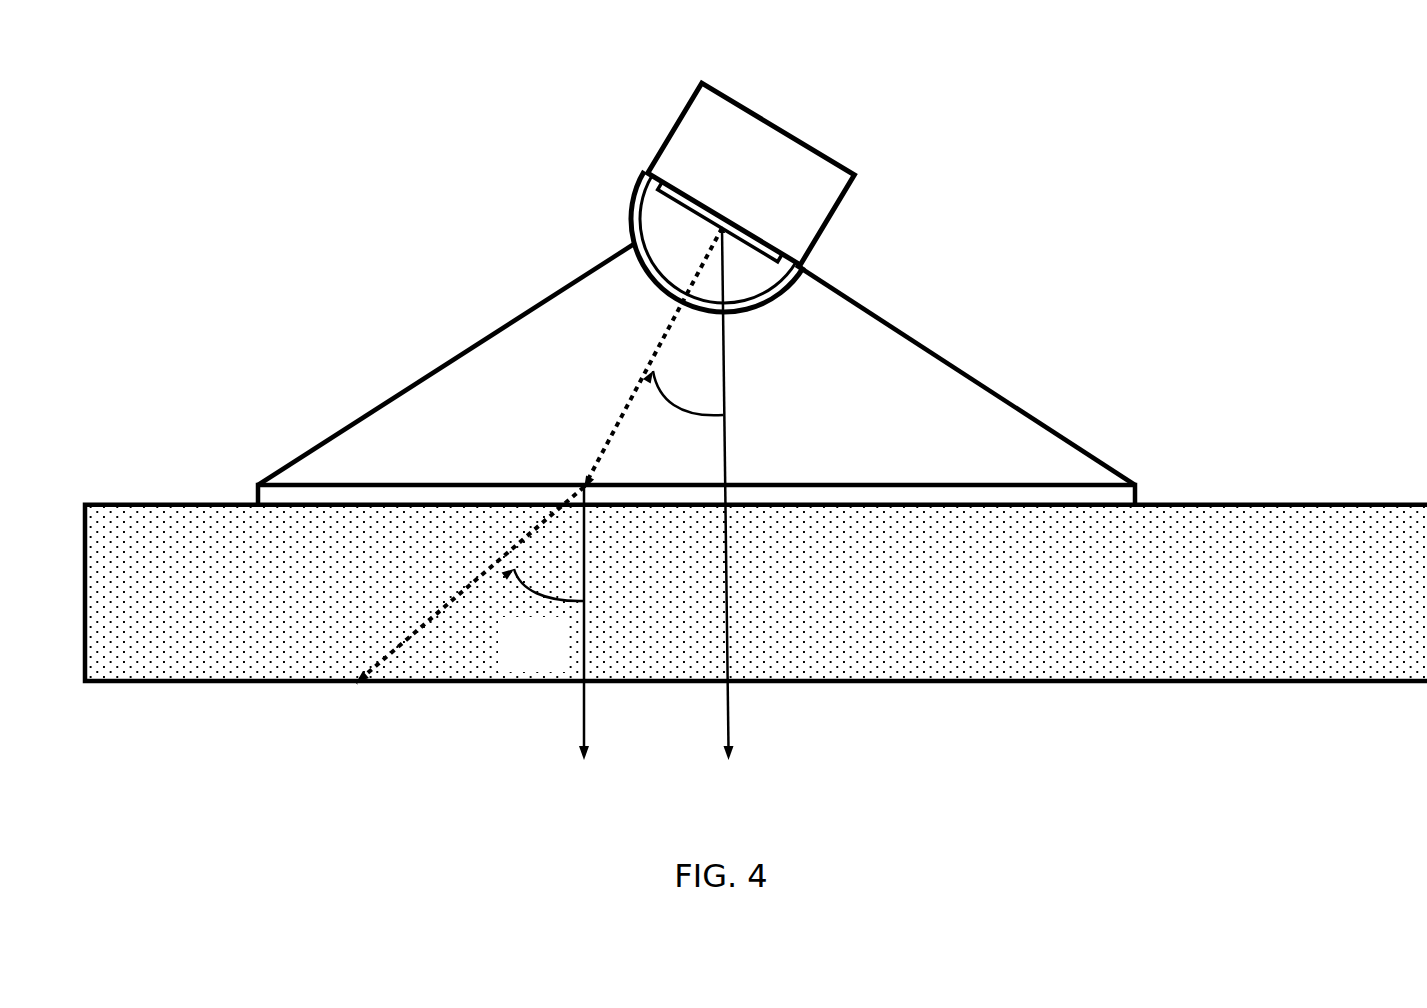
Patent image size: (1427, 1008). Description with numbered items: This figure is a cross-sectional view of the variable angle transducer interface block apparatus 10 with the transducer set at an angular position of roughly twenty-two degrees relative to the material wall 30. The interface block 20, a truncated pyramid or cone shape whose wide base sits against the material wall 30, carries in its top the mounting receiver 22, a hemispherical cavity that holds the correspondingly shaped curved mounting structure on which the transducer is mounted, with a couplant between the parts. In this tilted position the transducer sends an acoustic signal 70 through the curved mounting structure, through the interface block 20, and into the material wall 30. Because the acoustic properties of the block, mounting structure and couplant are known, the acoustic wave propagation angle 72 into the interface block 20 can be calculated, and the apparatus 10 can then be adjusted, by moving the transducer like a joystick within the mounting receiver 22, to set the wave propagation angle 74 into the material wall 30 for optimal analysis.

The variable angle transducer interface block apparatus 10 is at (380, 210).
The interface block 20 is at (1015, 423).
The mounting receiver 22 is at (800, 290).
The material wall 30 is at (1328, 537).
The acoustic signal 70 is at (446, 613).
The acoustic wave propagation angle 72 is at (678, 417).
The wave propagation angle 74 is at (541, 603).